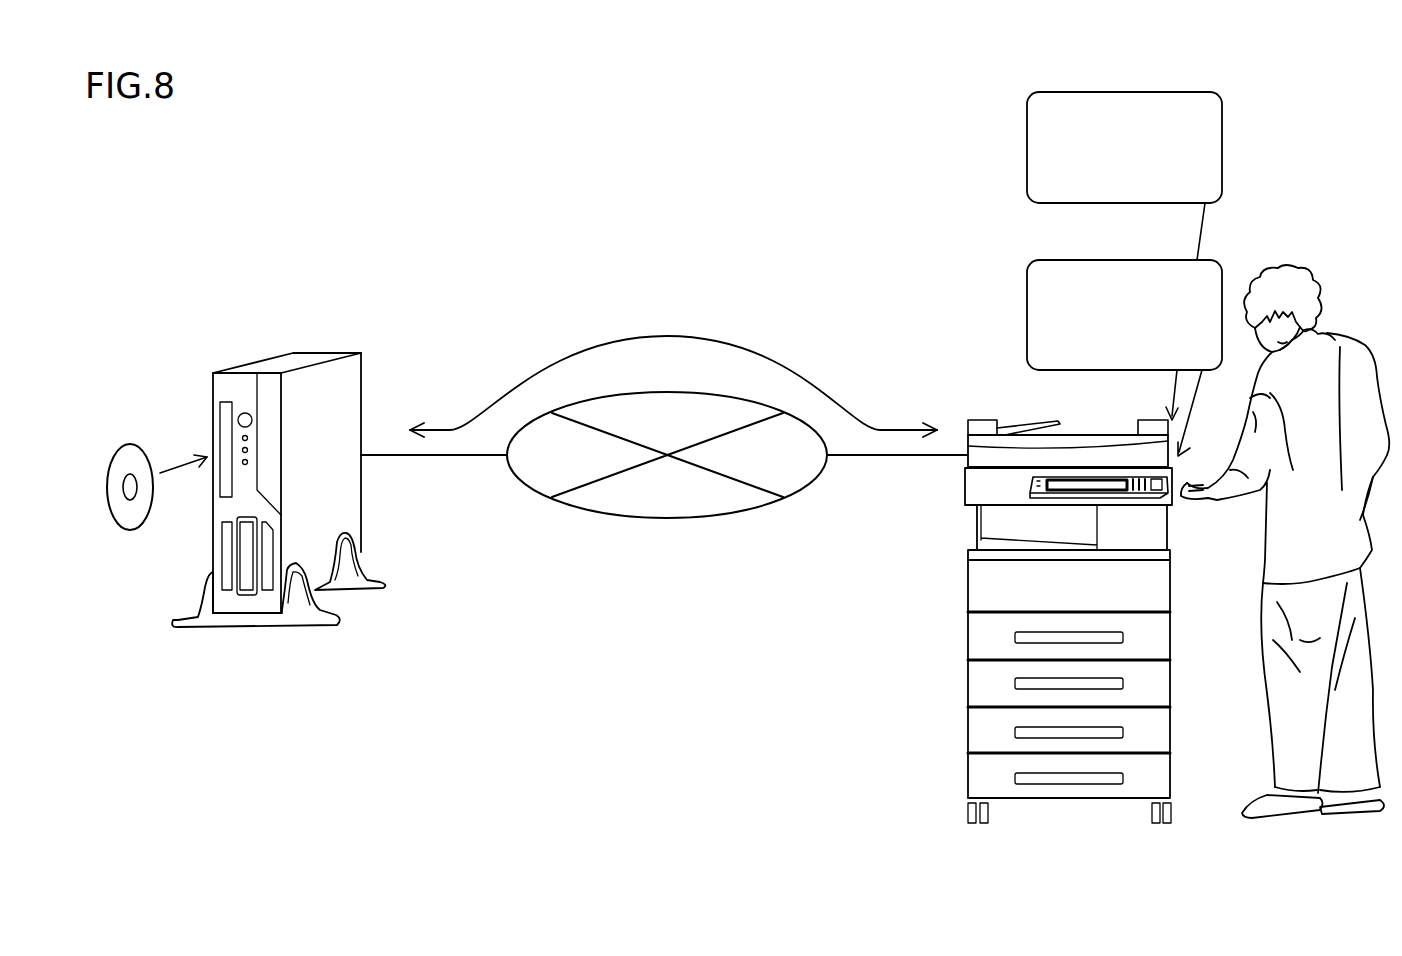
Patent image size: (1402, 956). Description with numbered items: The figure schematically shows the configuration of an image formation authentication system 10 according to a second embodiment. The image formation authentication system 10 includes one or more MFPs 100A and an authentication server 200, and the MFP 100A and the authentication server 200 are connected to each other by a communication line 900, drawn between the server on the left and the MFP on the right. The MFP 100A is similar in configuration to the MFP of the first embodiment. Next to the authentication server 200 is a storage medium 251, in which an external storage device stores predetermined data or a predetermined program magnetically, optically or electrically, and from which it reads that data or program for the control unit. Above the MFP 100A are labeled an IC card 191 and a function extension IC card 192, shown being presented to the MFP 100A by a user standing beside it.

The image formation authentication system 10 is at (259, 245).
The storage medium 251 is at (128, 442).
The authentication server 200 is at (362, 382).
The communication line 900 is at (713, 393).
The MFP 100A is at (967, 578).
The IC card 191 is at (1063, 258).
The function extension IC card 192 is at (1063, 90).